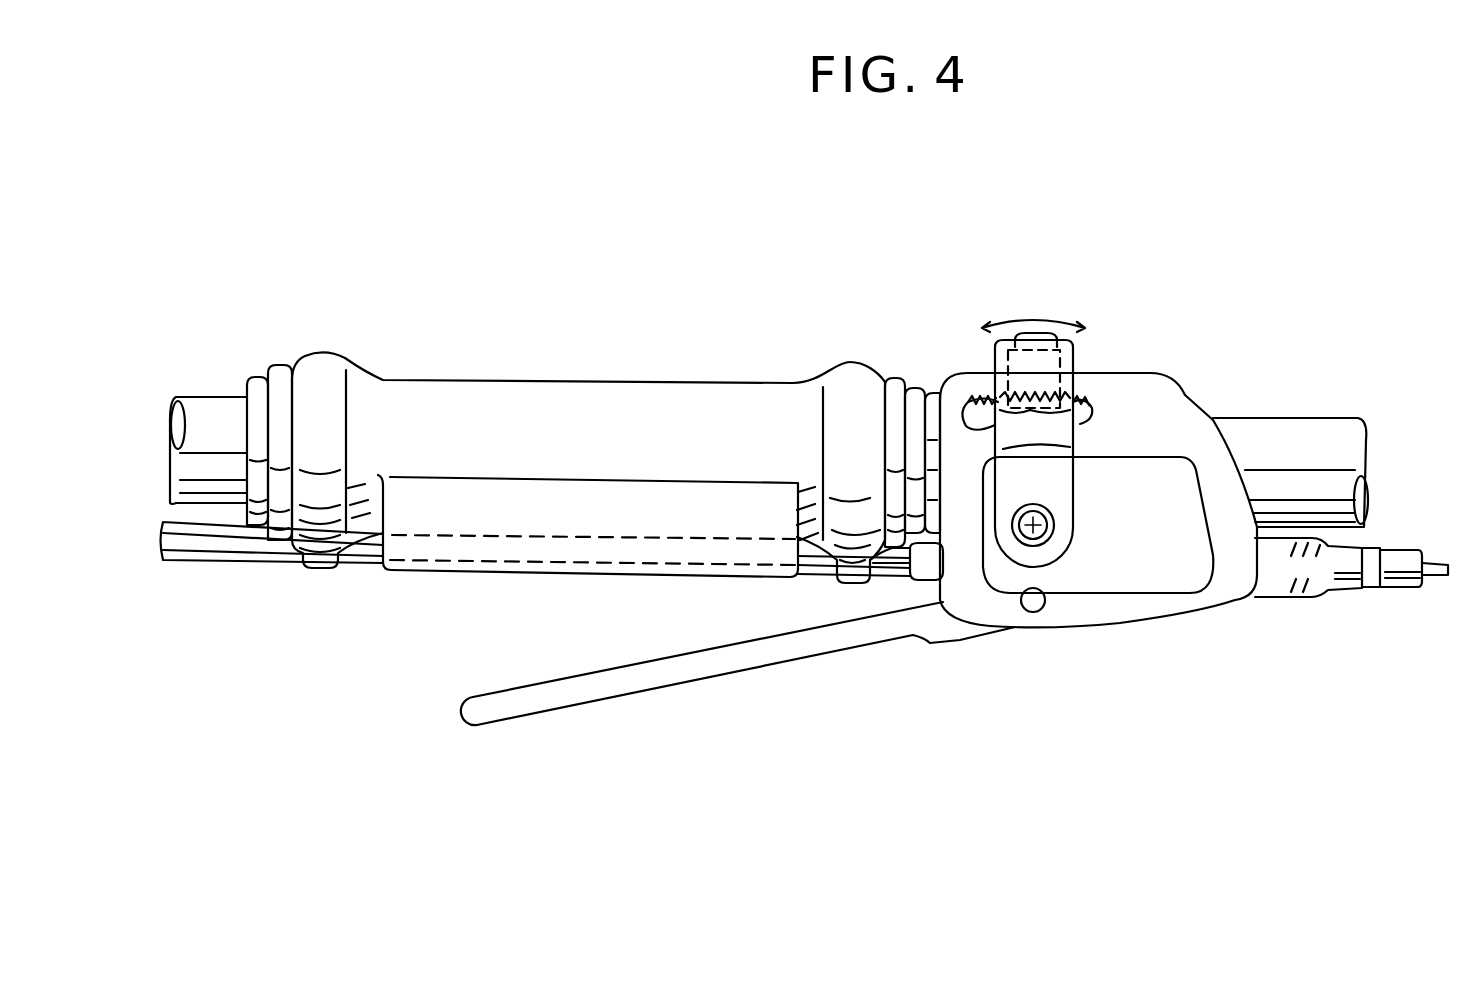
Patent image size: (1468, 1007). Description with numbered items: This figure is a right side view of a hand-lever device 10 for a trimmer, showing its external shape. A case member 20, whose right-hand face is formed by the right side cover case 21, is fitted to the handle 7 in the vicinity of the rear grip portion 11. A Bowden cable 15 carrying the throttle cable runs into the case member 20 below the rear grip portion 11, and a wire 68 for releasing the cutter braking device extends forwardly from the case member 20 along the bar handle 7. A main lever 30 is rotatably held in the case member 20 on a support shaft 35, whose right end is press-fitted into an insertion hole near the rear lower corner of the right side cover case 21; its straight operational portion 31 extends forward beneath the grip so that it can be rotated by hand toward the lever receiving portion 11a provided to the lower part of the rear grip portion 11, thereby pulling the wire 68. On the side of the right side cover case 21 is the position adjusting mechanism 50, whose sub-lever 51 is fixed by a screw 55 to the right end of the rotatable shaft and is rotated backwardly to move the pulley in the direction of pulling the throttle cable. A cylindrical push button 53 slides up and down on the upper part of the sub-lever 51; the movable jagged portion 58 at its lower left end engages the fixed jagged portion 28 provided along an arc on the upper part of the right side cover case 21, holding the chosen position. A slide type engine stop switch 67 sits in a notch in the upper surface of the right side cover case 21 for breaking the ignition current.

The handle 7 is at (1290, 425).
The hand-lever device 10 is at (1127, 331).
The rear grip portion 11 is at (560, 392).
The lever receiving portion 11a is at (477, 572).
The Bowden cable 15 is at (807, 582).
The case member 20 is at (1150, 372).
The right side cover case 21 is at (1190, 405).
The fixed jagged portion 28 is at (975, 412).
The main lever 30 is at (738, 676).
The straight operational portion 31 is at (630, 690).
The support shaft 35 is at (1036, 612).
The position adjusting mechanism 50 is at (1087, 505).
The sub-lever 51 is at (1073, 440).
The push button 53 is at (1027, 335).
The screw 55 is at (1055, 529).
The movable jagged portion 58 is at (1030, 410).
The engine stop switch 67 is at (1067, 345).
The wire 68 is at (1437, 574).